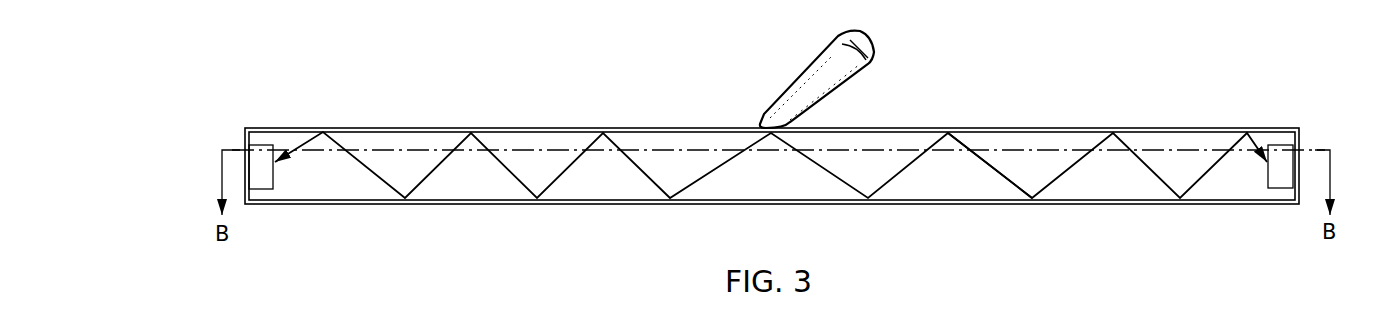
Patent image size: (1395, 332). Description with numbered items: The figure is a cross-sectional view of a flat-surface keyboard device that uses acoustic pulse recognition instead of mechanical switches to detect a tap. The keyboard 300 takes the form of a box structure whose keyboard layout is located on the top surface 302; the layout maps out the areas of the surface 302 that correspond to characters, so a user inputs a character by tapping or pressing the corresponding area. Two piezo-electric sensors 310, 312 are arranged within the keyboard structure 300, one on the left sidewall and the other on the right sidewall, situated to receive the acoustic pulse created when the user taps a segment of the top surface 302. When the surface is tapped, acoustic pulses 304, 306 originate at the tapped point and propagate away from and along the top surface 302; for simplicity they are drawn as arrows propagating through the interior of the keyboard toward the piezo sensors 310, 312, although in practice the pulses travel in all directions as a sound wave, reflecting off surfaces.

The keyboard 300 is at (577, 100).
The top surface 302 is at (1105, 132).
The acoustic pulse 304 is at (1013, 182).
The acoustic pulse 306 is at (423, 182).
The piezo-electric sensor 310 is at (266, 165).
The piezo-electric sensor 312 is at (1280, 150).